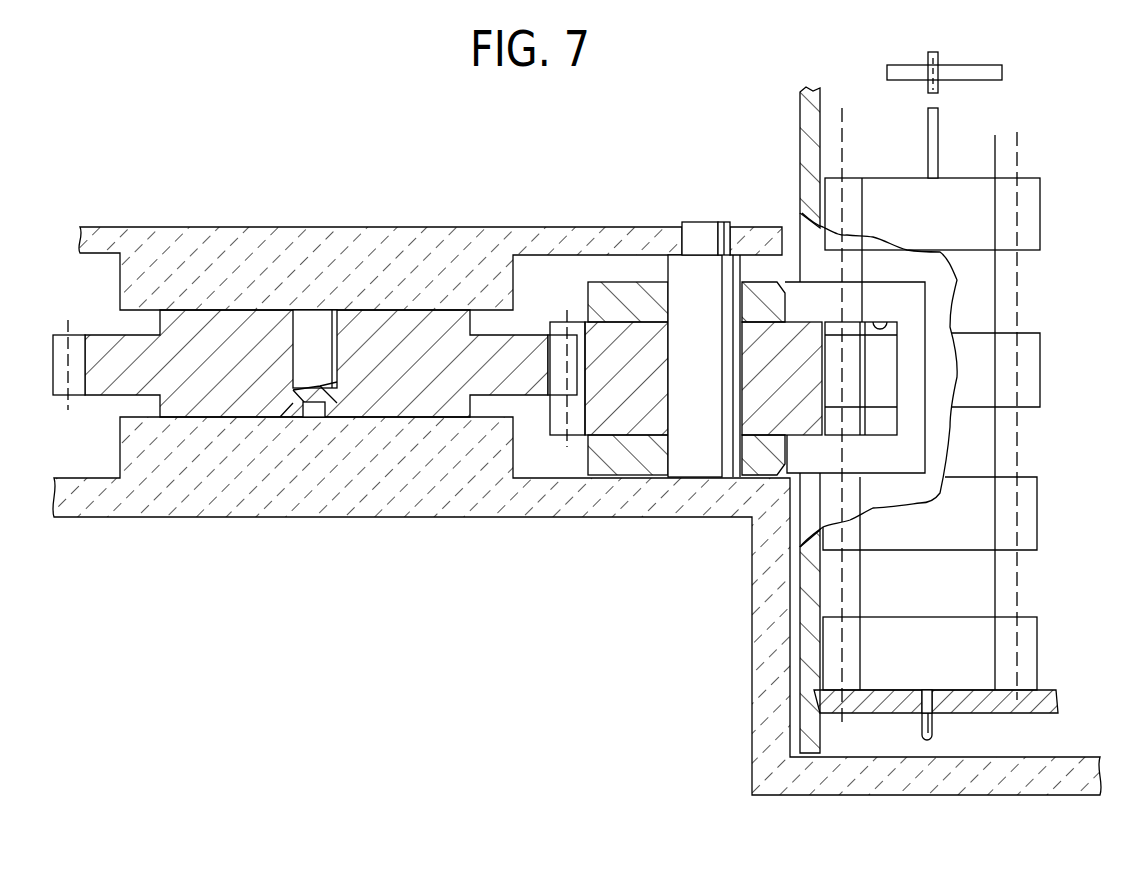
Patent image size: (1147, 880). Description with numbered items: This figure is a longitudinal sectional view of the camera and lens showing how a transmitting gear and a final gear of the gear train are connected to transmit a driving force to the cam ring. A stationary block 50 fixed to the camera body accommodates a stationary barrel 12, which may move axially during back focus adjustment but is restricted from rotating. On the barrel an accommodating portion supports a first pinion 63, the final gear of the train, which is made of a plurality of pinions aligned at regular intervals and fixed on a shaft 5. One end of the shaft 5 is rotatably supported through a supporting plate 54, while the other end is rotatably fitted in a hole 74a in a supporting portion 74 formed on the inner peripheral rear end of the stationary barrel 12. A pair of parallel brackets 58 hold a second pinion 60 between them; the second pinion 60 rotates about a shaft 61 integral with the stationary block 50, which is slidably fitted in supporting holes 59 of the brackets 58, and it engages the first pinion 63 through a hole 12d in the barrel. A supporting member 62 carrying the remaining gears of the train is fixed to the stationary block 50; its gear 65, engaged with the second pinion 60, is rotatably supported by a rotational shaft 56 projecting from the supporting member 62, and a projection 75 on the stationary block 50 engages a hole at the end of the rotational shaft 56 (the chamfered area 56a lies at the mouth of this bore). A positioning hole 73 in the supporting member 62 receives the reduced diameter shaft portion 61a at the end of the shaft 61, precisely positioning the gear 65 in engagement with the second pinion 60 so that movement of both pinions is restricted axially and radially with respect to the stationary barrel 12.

The shaft 5 is at (928, 52).
The stationary barrel 12 is at (800, 108).
The hole 12d is at (898, 320).
The stationary block 50 is at (760, 632).
The supporting plate 54 is at (965, 62).
The rotational shaft 56 is at (317, 327).
The bore chamfer 56a is at (313, 417).
The brackets 58 is at (613, 285).
The supporting holes 59 is at (667, 450).
The second pinion 60 is at (620, 418).
The shaft 61 is at (677, 272).
The reduced diameter shaft portion 61a is at (720, 222).
The supporting member 62 is at (460, 237).
The first pinion 63 is at (1044, 214).
The gear 65 is at (392, 343).
The positioning hole 73 is at (695, 225).
The supporting portion 74 is at (1003, 703).
The hole 74a is at (928, 690).
The projection 75 is at (317, 417).